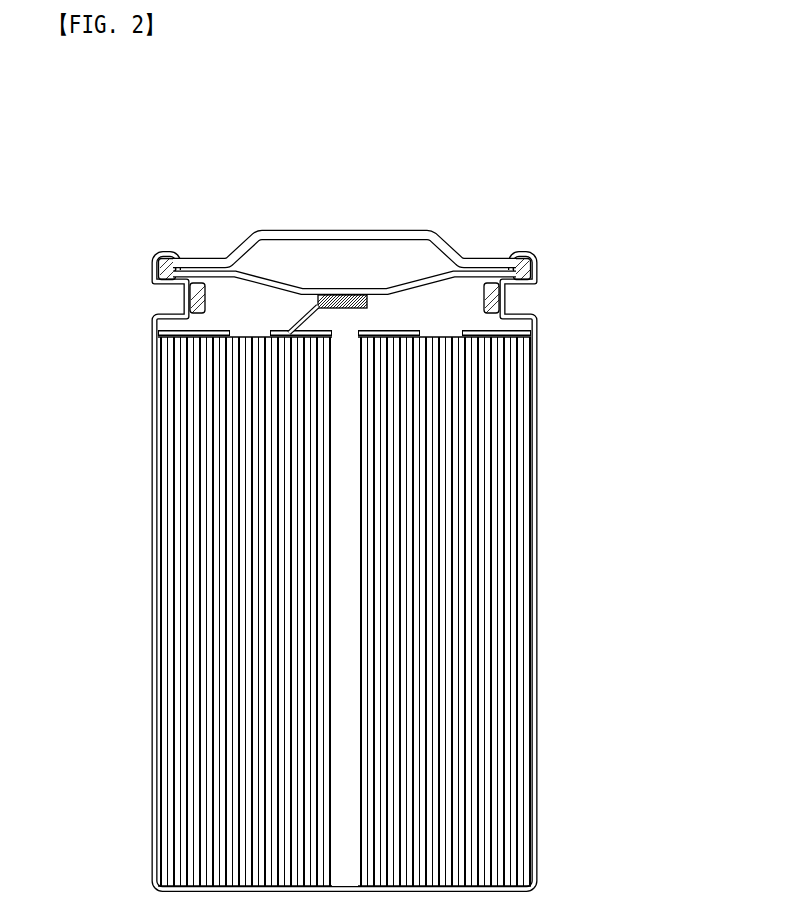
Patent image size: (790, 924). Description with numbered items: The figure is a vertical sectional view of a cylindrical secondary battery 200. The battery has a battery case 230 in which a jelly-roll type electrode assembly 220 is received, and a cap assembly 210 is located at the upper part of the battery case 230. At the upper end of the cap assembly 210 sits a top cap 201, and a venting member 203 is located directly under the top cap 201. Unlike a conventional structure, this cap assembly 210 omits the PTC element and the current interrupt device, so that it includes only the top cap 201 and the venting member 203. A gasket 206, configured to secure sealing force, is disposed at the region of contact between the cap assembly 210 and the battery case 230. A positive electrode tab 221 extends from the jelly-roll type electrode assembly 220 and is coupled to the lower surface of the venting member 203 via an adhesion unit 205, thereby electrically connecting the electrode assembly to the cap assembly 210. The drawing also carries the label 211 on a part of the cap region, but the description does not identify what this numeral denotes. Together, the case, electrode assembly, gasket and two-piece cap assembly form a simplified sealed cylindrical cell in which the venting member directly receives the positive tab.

The cylindrical secondary battery 200 is at (175, 164).
The top cap 201 is at (463, 238).
The venting member 203 is at (540, 282).
The adhesion unit 205 is at (355, 284).
The gasket 206 is at (151, 264).
The cap assembly 210 is at (433, 249).
The current collector plate 211 is at (538, 334).
The jelly-roll type electrode assembly 220 is at (540, 547).
The positive electrode tab 221 is at (300, 312).
The battery case 230 is at (540, 395).